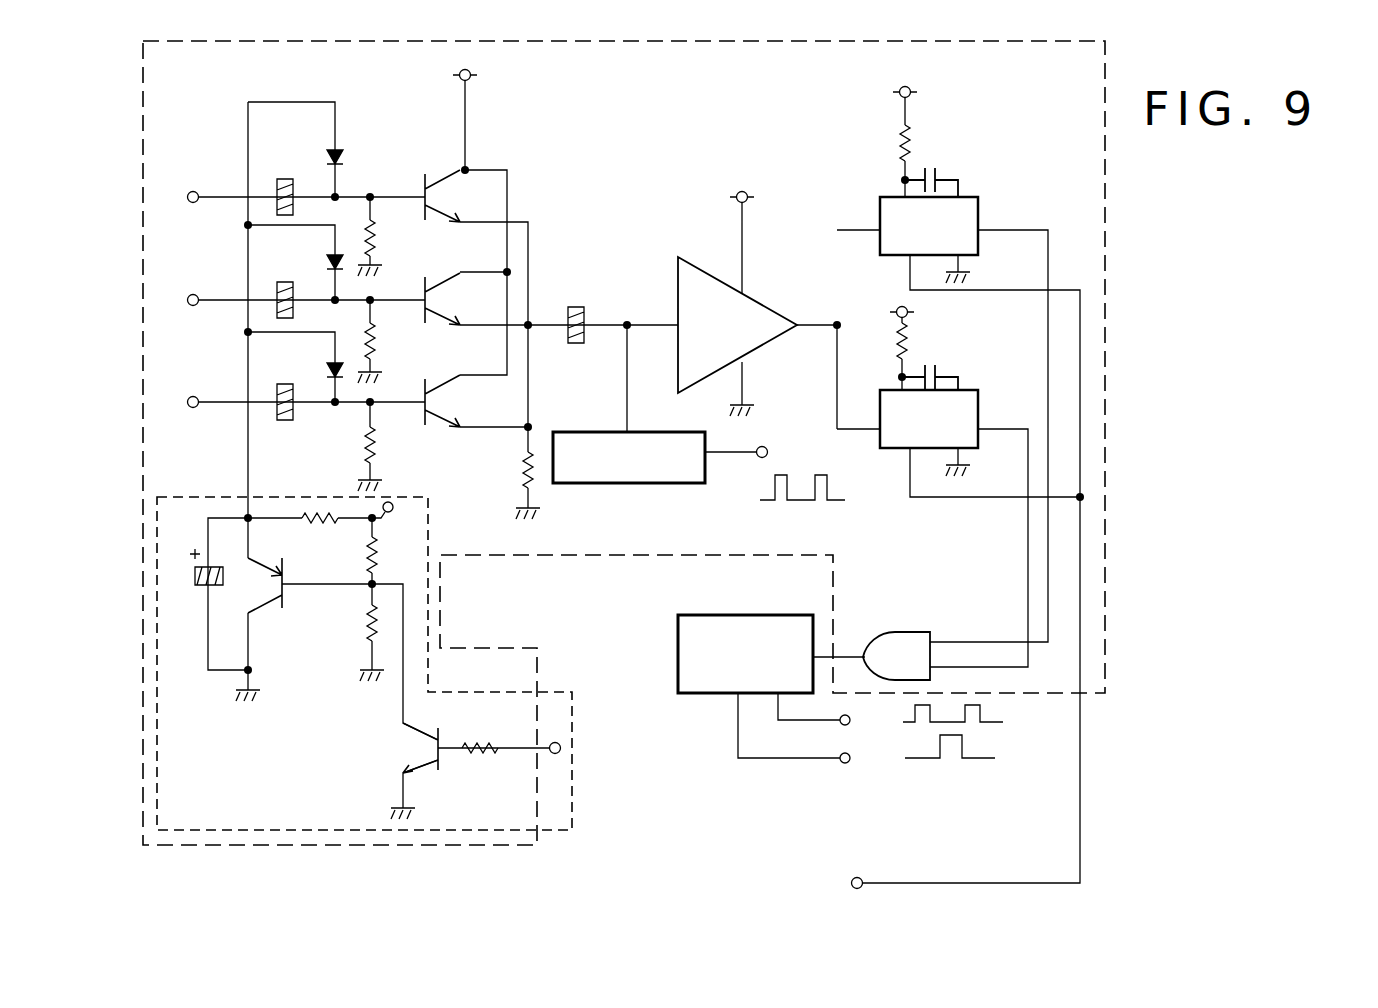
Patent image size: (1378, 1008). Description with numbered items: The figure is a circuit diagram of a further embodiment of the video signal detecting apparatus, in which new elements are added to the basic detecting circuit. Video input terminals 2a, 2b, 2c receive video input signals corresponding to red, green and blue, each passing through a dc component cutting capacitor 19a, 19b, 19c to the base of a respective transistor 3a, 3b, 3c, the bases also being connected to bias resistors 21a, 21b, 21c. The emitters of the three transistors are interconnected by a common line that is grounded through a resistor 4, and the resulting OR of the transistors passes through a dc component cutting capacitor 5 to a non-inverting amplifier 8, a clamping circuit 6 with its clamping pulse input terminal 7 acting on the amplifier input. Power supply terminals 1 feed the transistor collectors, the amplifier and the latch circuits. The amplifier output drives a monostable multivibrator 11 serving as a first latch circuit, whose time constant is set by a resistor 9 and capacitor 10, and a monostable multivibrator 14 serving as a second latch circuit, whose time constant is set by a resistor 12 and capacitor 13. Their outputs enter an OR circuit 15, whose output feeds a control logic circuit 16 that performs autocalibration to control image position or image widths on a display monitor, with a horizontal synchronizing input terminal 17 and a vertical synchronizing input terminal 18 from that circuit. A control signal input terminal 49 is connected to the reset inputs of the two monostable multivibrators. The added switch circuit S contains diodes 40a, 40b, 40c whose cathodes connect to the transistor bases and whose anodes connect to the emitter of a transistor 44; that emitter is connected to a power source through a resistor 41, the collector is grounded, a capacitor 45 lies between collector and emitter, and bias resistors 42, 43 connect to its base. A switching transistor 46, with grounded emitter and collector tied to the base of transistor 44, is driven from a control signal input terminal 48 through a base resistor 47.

The power supply terminal 1 is at (473, 74).
The video input terminal 2a is at (193, 189).
The video input terminal 2b is at (193, 294).
The video input terminal 2c is at (193, 396).
The transistor 3a is at (447, 192).
The transistor 3b is at (438, 292).
The transistor 3c is at (438, 394).
The resistor 4 is at (520, 476).
The dc component cutting capacitor 5 is at (576, 306).
The clamping circuit 6 is at (648, 428).
The clamping pulse input terminal 7 is at (768, 450).
The non-inverting amplifier 8 is at (764, 300).
The resistor 9 is at (912, 144).
The capacitor 10 is at (936, 164).
The monostable multivibrator 11 is at (978, 198).
The resistor 12 is at (907, 352).
The capacitor 13 is at (944, 368).
The monostable multivibrator 14 is at (984, 392).
The OR circuit 15 is at (922, 630).
The control logic circuit 16 is at (776, 614).
The horizontal synchronizing input terminal 17 is at (851, 720).
The vertical synchronizing input terminal 18 is at (851, 758).
The dc component cutting capacitor 19a is at (283, 177).
The dc component cutting capacitor 19b is at (283, 282).
The dc component cutting capacitor 19c is at (283, 384).
The bias resistor 21a is at (373, 240).
The bias resistor 21b is at (373, 342).
The bias resistor 21c is at (373, 442).
The diode 40a is at (343, 156).
The diode 40b is at (343, 254).
The diode 40c is at (343, 358).
The resistor 41 is at (319, 510).
The bias resistor 42 is at (376, 560).
The bias resistor 43 is at (365, 632).
The transistor 44 is at (282, 572).
The capacitor 45 is at (186, 566).
The switching transistor 46 is at (436, 740).
The base resistor 47 is at (480, 746).
The control signal input terminal 48 is at (560, 744).
The control signal input terminal 49 is at (858, 878).
The switch circuit S is at (560, 690).